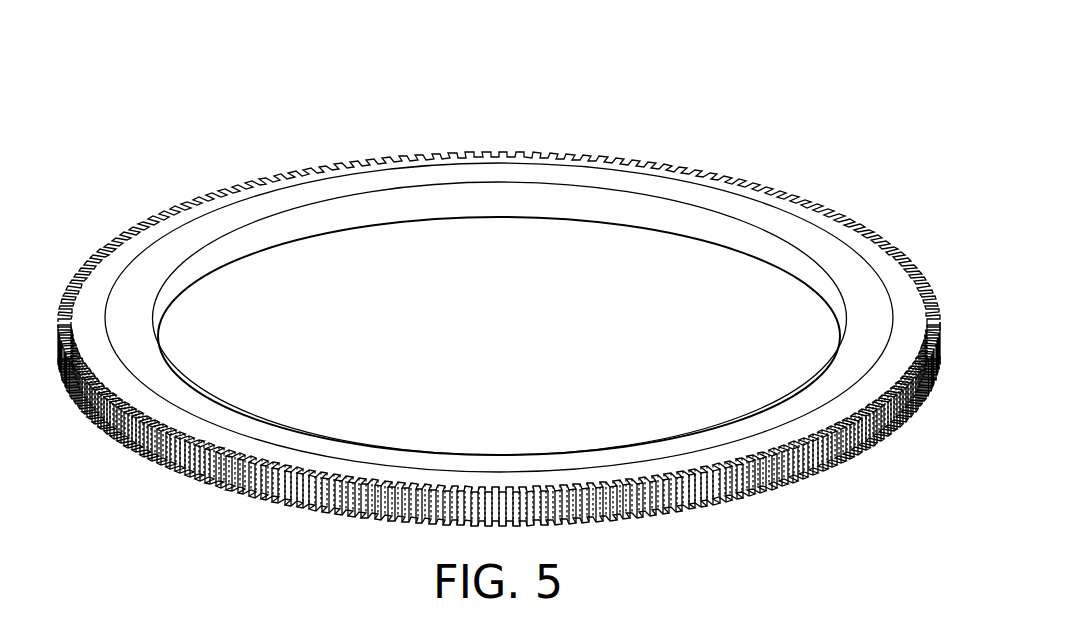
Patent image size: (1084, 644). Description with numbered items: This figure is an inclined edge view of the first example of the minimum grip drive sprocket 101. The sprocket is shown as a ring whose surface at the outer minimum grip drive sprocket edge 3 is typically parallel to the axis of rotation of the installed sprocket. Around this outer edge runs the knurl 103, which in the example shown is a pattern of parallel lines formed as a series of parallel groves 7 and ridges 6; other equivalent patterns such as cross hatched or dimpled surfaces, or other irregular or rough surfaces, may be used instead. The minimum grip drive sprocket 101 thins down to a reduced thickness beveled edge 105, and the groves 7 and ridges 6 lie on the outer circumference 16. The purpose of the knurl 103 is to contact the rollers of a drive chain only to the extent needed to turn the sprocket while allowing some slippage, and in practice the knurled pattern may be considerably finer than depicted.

The minimum grip drive sprocket 101 is at (736, 158).
The outer circumference 16 is at (125, 237).
The beveled edge 105 is at (908, 302).
The groves 7 is at (628, 500).
The ridges 6 is at (648, 507).
The knurl 103 is at (843, 458).
The outer minimum grip drive sprocket edge 3 is at (176, 475).